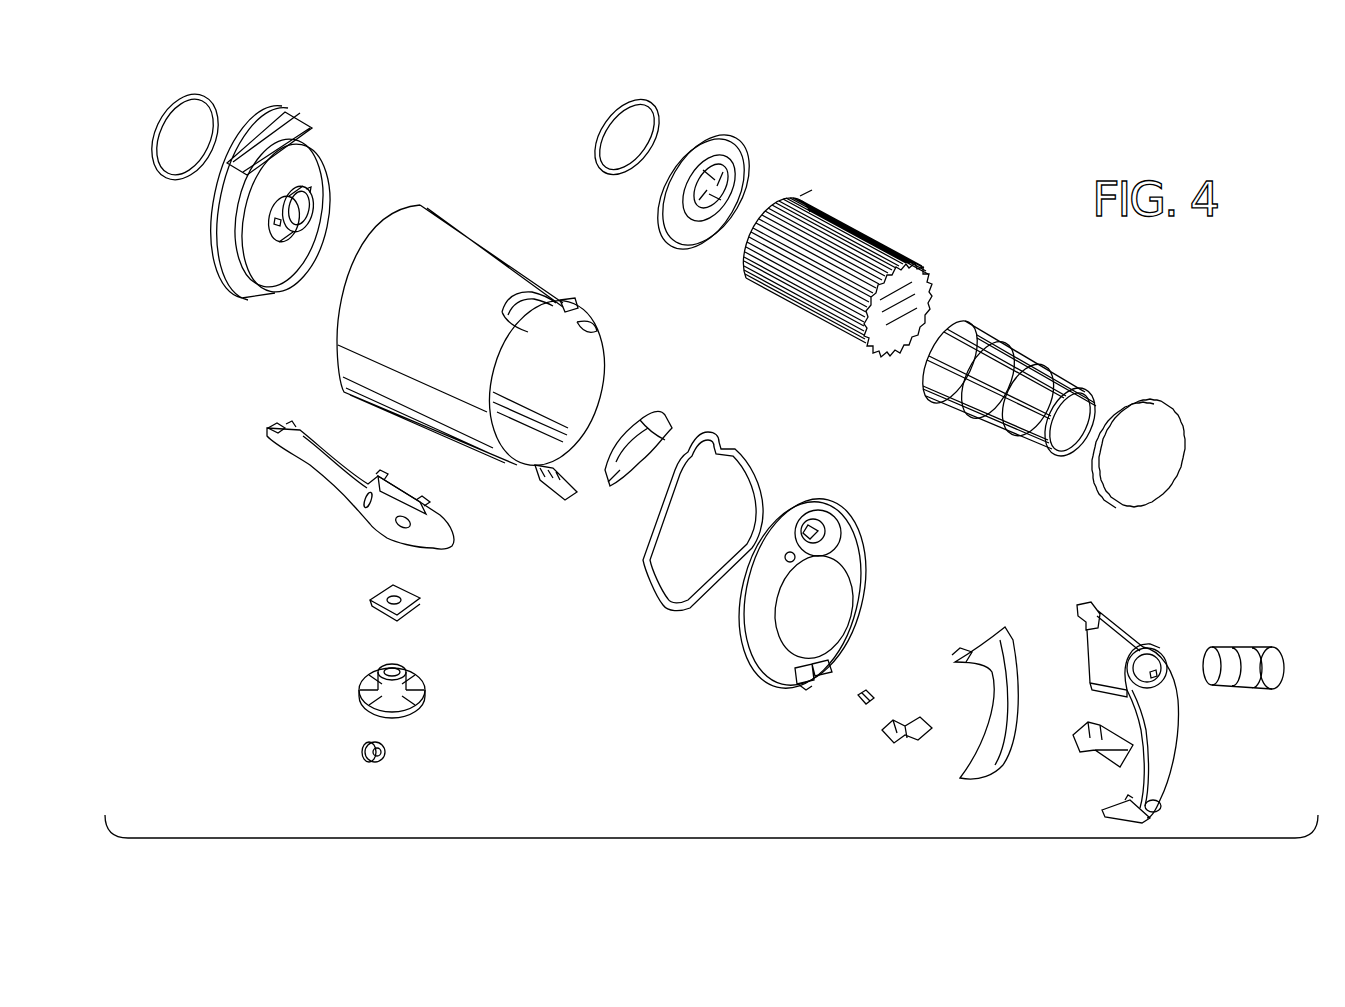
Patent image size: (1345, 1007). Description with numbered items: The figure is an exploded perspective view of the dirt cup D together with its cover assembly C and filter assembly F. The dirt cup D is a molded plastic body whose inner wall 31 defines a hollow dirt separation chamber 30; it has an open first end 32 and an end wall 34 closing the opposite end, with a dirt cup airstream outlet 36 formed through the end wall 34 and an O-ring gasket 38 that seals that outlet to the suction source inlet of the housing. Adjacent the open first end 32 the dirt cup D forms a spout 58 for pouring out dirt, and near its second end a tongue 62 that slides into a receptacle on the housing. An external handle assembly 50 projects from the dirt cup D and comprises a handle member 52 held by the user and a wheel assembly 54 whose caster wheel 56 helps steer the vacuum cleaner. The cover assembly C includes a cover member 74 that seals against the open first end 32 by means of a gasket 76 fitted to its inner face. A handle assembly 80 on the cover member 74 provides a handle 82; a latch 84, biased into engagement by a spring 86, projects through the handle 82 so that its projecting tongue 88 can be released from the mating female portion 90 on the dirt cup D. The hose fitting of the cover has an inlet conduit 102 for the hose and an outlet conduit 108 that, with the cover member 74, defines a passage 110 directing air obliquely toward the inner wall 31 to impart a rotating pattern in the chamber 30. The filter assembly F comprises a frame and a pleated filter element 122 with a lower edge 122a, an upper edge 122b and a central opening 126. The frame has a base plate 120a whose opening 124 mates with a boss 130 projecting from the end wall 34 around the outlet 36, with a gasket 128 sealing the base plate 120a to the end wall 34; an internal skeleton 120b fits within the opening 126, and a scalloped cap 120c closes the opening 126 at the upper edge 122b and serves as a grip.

The dirt separation chamber 30 is at (552, 383).
The inner wall 31 is at (530, 448).
The open first end 32 is at (598, 332).
The end wall 34 is at (336, 148).
The dirt cup airstream outlet 36 is at (304, 214).
The O-ring gasket 38 is at (182, 180).
The handle assembly 50 is at (422, 600).
The handle member 52 is at (326, 490).
The wheel assembly 54 is at (430, 684).
The caster wheel 56 is at (390, 751).
The spout 58 is at (579, 298).
The tongue 62 is at (272, 436).
The cover member 74 is at (852, 515).
The gasket 76 is at (746, 439).
The handle assembly 80 is at (1031, 640).
The handle 82 is at (1165, 730).
The latch 84 is at (928, 748).
The spring 86 is at (872, 688).
The projecting tongue 88 is at (880, 733).
The female portion 90 is at (536, 472).
The inlet conduit 102 is at (1257, 653).
The outlet conduit 108 is at (657, 408).
The passage 110 is at (612, 482).
The base plate 120a is at (747, 147).
The internal skeleton 120b is at (1052, 360).
The cap 120c is at (1170, 400).
The filter element 122 is at (862, 215).
The lower edge 122a is at (809, 190).
The upper edge 122b is at (898, 362).
The opening 124 is at (724, 204).
The central opening 126 is at (908, 293).
The gasket 128 is at (660, 123).
The boss 130 is at (278, 238).
The cover assembly C is at (722, 722).
The dirt cup D is at (268, 371).
The filter assembly F is at (976, 188).